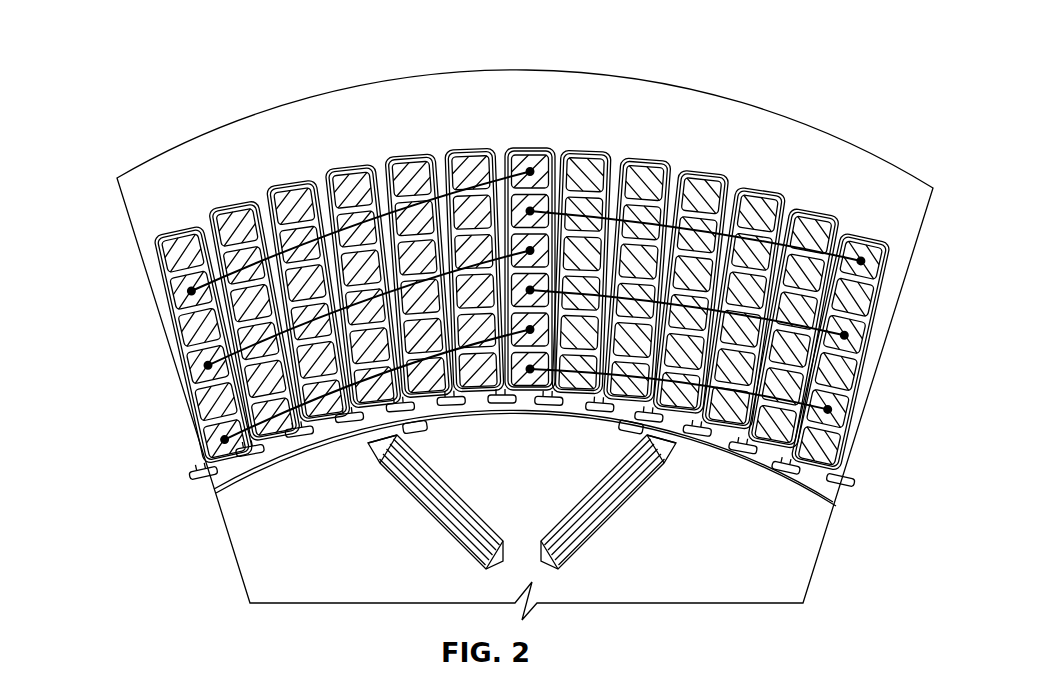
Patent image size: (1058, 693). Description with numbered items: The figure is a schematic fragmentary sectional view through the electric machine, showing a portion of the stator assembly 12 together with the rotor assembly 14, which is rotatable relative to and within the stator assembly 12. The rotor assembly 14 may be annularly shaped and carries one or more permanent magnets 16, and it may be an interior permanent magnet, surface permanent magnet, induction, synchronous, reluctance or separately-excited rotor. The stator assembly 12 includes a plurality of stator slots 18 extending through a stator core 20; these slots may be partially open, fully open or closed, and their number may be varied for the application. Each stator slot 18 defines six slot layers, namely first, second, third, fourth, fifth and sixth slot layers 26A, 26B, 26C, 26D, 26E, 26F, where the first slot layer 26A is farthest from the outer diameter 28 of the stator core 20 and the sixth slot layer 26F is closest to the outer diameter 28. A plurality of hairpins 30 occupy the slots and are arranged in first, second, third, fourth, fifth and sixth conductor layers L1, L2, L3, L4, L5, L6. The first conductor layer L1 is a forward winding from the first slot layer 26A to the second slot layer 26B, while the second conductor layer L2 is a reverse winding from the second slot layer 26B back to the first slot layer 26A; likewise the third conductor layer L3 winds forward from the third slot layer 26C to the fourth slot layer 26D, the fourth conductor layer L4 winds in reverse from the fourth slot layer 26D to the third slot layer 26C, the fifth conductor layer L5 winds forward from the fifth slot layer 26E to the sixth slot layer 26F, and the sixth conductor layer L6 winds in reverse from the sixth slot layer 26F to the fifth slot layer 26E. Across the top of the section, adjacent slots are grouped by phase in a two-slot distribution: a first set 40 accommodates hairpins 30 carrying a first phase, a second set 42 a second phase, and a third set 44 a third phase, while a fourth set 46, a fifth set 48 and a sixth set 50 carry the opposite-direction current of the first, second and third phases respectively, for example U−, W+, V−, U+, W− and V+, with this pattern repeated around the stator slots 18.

The stator assembly 12 is at (822, 68).
The rotor assembly 14 is at (709, 540).
The permanent magnet 16 is at (456, 530).
The stator slot 18 is at (900, 240).
The stator core 20 is at (200, 247).
The first slot layer 26A is at (197, 447).
The second slot layer 26B is at (189, 409).
The third slot layer 26C is at (180, 372).
The fourth slot layer 26D is at (172, 335).
The fifth slot layer 26E is at (163, 298).
The sixth slot layer 26F is at (152, 261).
The outer diameter 28 is at (604, 70).
The hairpin 30 is at (870, 282).
The first set 40 is at (313, 160).
The second set 42 is at (437, 133).
The third set 44 is at (557, 131).
The fourth set 46 is at (558, 137).
The fifth set 48 is at (795, 190).
The sixth set 50 is at (870, 227).
The first conductor layer L1 is at (660, 250).
The second conductor layer L2 is at (393, 230).
The third conductor layer L3 is at (735, 300).
The fourth conductor layer L4 is at (365, 280).
The fifth conductor layer L5 is at (675, 300).
The sixth conductor layer L6 is at (383, 230).